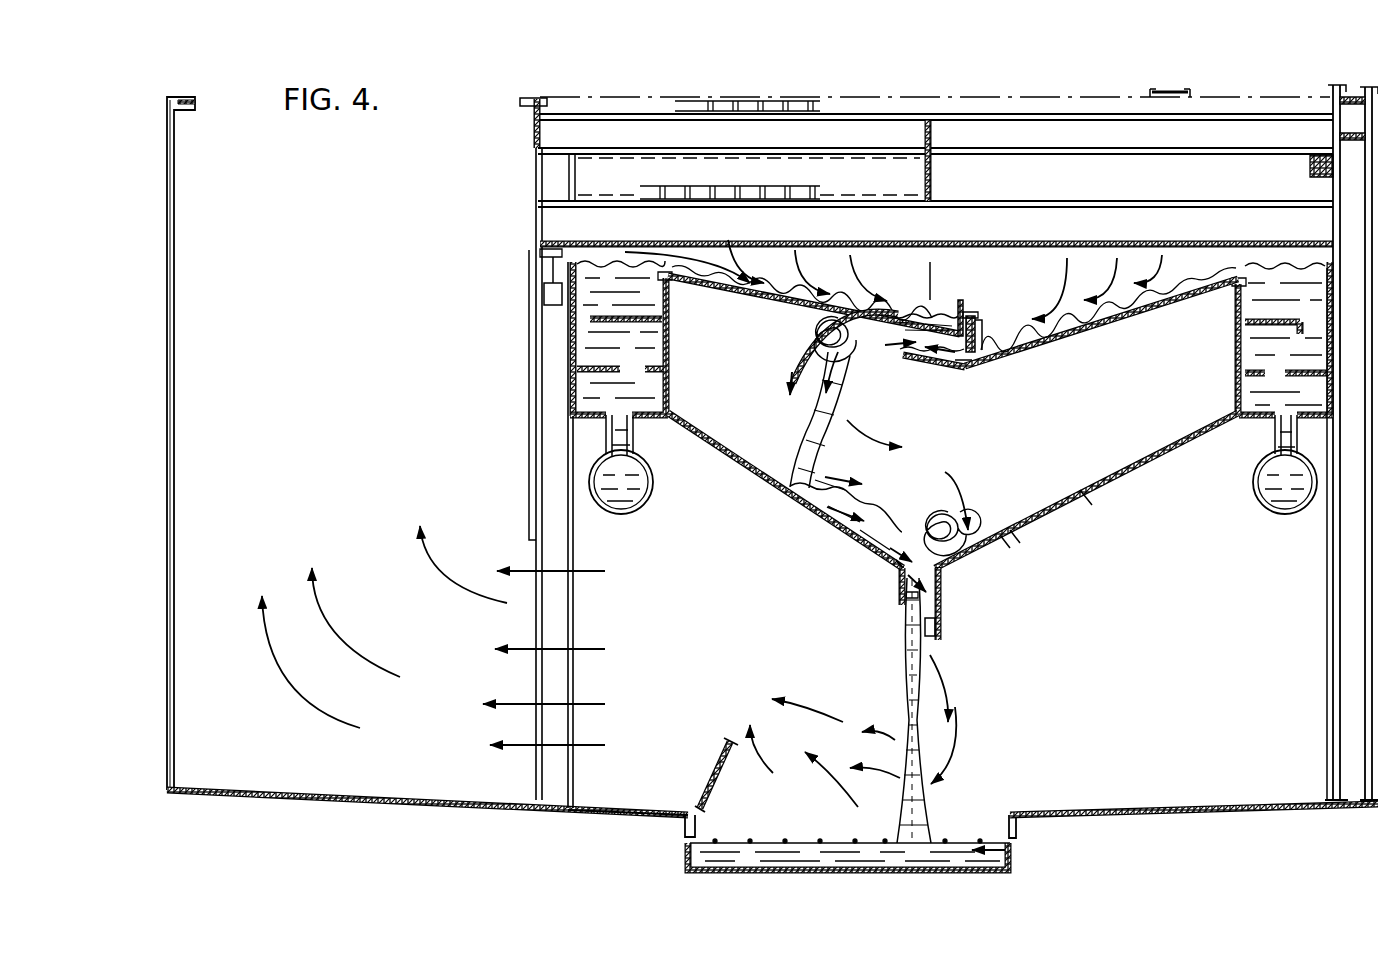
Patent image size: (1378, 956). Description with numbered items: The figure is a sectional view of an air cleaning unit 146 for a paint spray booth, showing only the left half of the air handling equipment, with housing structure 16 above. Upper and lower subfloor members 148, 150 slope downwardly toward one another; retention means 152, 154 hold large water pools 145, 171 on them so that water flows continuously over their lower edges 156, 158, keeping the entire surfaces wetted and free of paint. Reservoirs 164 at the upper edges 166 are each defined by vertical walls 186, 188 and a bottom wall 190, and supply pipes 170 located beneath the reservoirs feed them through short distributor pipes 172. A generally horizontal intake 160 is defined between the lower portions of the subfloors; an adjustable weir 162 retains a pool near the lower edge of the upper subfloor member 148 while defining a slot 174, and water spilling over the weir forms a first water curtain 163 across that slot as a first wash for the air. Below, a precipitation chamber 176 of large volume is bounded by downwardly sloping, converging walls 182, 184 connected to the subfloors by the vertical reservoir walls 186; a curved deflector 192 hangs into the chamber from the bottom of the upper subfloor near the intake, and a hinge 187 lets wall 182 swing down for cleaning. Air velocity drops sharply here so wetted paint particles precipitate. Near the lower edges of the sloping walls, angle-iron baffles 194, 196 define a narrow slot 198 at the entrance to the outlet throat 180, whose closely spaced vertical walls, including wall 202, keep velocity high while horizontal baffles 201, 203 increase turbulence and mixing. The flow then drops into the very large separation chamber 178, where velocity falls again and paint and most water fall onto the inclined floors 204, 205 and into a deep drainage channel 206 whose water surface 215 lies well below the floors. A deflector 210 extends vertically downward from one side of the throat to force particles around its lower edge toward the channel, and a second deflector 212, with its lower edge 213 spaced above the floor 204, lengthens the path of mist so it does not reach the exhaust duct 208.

The dishwasher housing 16 is at (1018, 250).
The water pool 145 is at (921, 318).
The air cleaning unit 146 is at (545, 821).
The upper subfloor member 148 is at (766, 302).
The lower subfloor member 150 is at (1157, 305).
The water retention means 152 is at (961, 262).
The water retention means 154 is at (938, 378).
The lower edge 156 is at (951, 306).
The lower edge 158 is at (905, 363).
The intake 160 is at (836, 384).
The adjustable weir 162 is at (968, 304).
The first water curtain 163 is at (977, 332).
The reservoir 164 is at (625, 251).
The upper edge 166 is at (722, 284).
The supply pipe 170 is at (621, 515).
The water pool 171 is at (958, 368).
The distributor pipe 172 is at (637, 453).
The slot 174 is at (966, 356).
The precipitation chamber 176 is at (833, 394).
The separation chamber 178 is at (1150, 679).
The outlet throat 180 is at (979, 522).
The sloping wall 182 is at (792, 490).
The sloping wall 184 is at (1055, 520).
The vertical reservoir wall 186 is at (668, 380).
The hinge 187 is at (669, 411).
The vertical wall 188 is at (568, 312).
The bottom wall 190 is at (568, 440).
The curved deflector 192 is at (796, 352).
The baffle 194 is at (900, 572).
The baffle 196 is at (940, 578).
The slot 198 is at (892, 534).
The horizontal baffle 201 is at (900, 606).
The vertical wall 202 is at (942, 616).
The horizontal baffle 203 is at (945, 636).
The floor 204 is at (598, 812).
The right hand floor 205 is at (1117, 772).
The drainage channel 206 is at (1014, 846).
The exhaust duct 208 is at (215, 650).
The deflector 210 is at (906, 670).
The second deflector 212 is at (718, 749).
The lower edge 213 is at (696, 808).
The water surface 215 is at (797, 842).